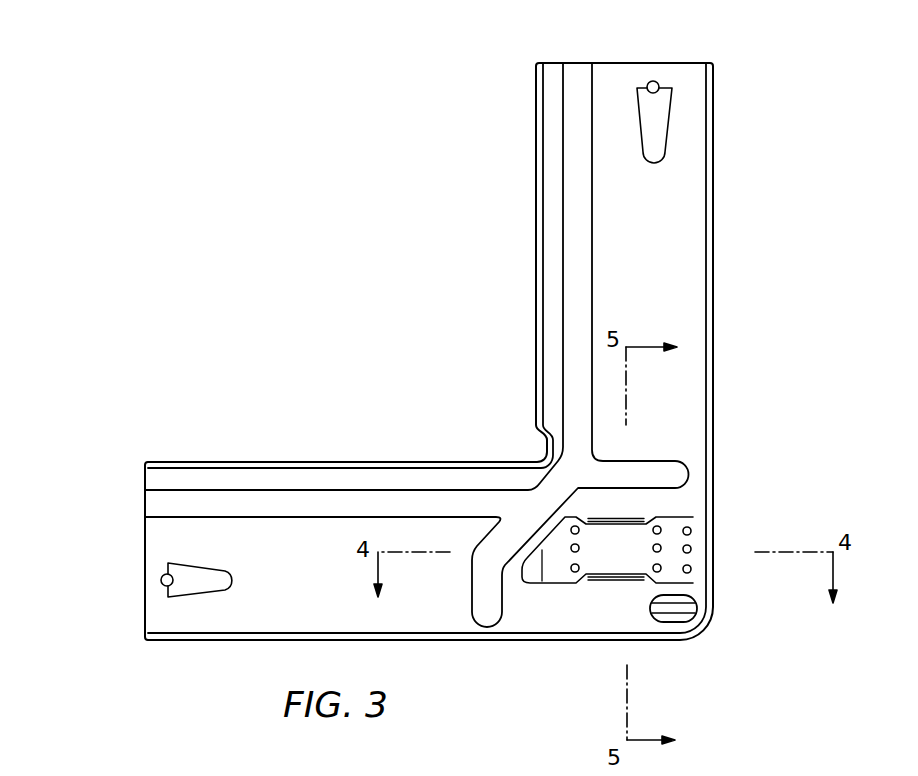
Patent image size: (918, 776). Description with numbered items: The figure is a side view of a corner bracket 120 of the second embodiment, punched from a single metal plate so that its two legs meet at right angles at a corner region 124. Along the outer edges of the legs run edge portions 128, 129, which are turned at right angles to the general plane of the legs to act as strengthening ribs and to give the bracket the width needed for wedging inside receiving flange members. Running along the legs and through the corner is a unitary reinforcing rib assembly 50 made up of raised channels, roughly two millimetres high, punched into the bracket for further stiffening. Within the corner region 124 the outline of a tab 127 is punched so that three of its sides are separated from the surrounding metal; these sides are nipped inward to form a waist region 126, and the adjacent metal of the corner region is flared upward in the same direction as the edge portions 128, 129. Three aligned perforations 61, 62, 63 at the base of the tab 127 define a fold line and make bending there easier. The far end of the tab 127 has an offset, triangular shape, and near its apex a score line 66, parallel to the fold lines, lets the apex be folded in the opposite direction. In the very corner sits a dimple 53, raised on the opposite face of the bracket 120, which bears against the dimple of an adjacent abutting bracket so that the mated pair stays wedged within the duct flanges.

The reinforcing rib assembly 50 is at (573, 212).
The dimple 53 is at (682, 612).
The perforation 61 is at (691, 531).
The perforation 62 is at (691, 549).
The perforation 63 is at (691, 569).
The score line 66 is at (583, 605).
The bracket 120 is at (135, 555).
The corner region 124 is at (732, 628).
The waist region 126 is at (620, 557).
The tab 127 is at (583, 570).
The edge portion 128 is at (230, 460).
The edge portion 129 is at (183, 640).